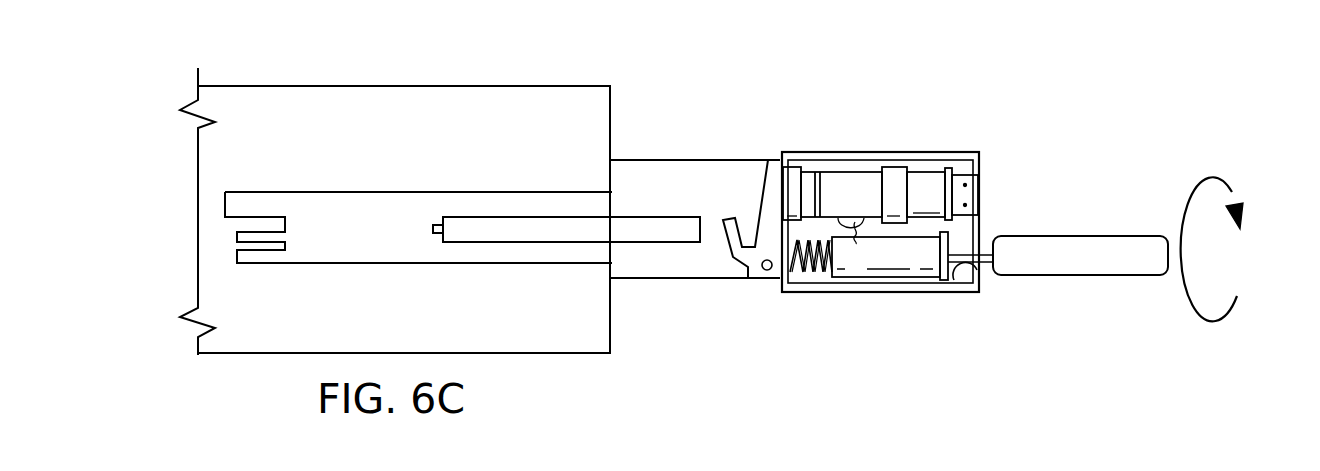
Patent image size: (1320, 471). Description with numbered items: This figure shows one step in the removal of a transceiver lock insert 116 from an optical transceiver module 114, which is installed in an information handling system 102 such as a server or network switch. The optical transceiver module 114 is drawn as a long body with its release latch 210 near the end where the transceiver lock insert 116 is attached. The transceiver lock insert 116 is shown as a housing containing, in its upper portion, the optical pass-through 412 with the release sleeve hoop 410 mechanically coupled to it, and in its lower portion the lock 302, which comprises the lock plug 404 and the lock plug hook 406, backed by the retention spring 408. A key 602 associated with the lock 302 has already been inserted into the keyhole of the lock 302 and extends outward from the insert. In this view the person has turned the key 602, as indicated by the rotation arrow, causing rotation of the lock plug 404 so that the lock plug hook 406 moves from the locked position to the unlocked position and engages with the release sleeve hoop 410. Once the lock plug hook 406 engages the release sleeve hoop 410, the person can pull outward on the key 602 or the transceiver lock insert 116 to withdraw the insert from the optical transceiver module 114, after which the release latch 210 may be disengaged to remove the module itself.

The information handling system 102 is at (403, 86).
The optical transceiver module 114 is at (432, 192).
The transceiver lock insert 116 is at (957, 152).
The release latch 210 is at (763, 282).
The lock 302 is at (960, 263).
The lock plug 404 is at (912, 263).
The lock plug hook 406 is at (857, 242).
The retention spring 408 is at (817, 268).
The release sleeve hoop 410 is at (830, 220).
The optical pass-through 412 is at (867, 180).
The key 602 is at (1080, 235).